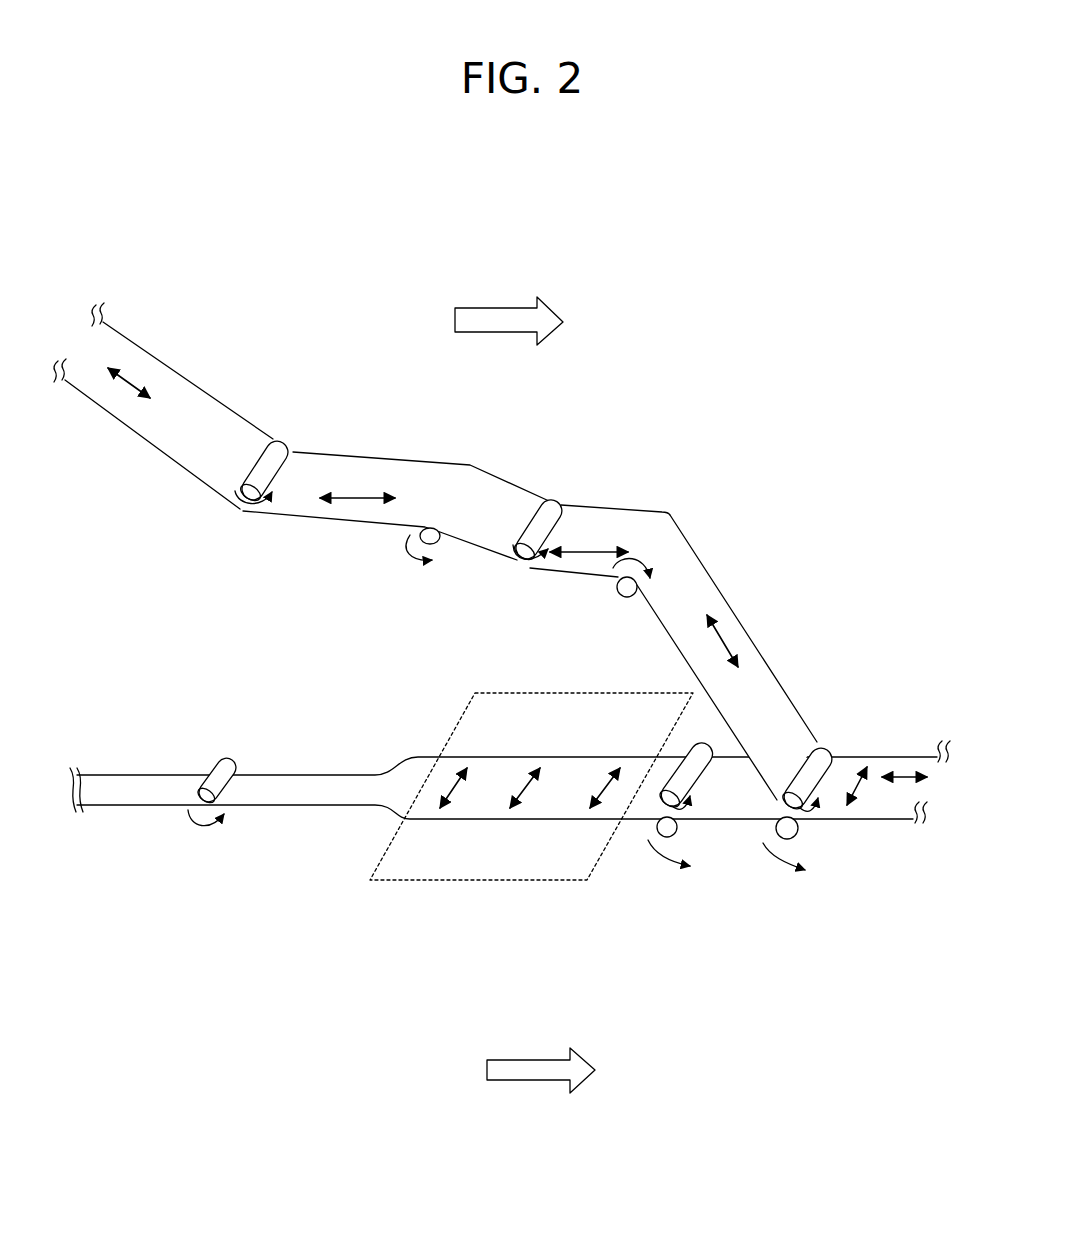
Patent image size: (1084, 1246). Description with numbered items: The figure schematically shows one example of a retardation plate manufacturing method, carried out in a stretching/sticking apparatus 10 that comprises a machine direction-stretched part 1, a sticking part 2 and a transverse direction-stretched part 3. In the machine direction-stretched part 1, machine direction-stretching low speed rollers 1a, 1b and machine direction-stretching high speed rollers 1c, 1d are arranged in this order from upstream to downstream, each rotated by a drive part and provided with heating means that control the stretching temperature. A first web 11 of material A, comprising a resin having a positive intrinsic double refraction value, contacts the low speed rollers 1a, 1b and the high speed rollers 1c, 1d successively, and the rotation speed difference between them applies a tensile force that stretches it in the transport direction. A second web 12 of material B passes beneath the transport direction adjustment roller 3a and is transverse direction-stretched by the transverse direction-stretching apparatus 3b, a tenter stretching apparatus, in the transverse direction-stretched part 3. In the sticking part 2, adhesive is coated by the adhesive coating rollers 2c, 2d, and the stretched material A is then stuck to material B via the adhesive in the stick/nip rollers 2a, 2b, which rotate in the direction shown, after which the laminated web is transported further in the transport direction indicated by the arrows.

The stretching/sticking apparatus 10 is at (623, 338).
The first web 11 is at (208, 410).
The second web 12 is at (112, 787).
The machine direction-stretched part 1 is at (657, 653).
The machine direction-stretching low speed roller 1a is at (253, 510).
The machine direction-stretching low speed roller 1b is at (428, 548).
The machine direction-stretching high speed roller 1c is at (522, 570).
The machine direction-stretching high speed roller 1d is at (630, 598).
The sticking part 2 is at (882, 960).
The stick/nip roller 2a is at (787, 840).
The stick/nip roller 2b is at (832, 740).
The adhesive coating roller 2c is at (685, 755).
The adhesive coating roller 2d is at (683, 822).
The transverse direction-stretched part 3 is at (600, 987).
The transport direction adjustment roller 3a is at (203, 813).
The transverse direction-stretching apparatus 3b is at (560, 880).